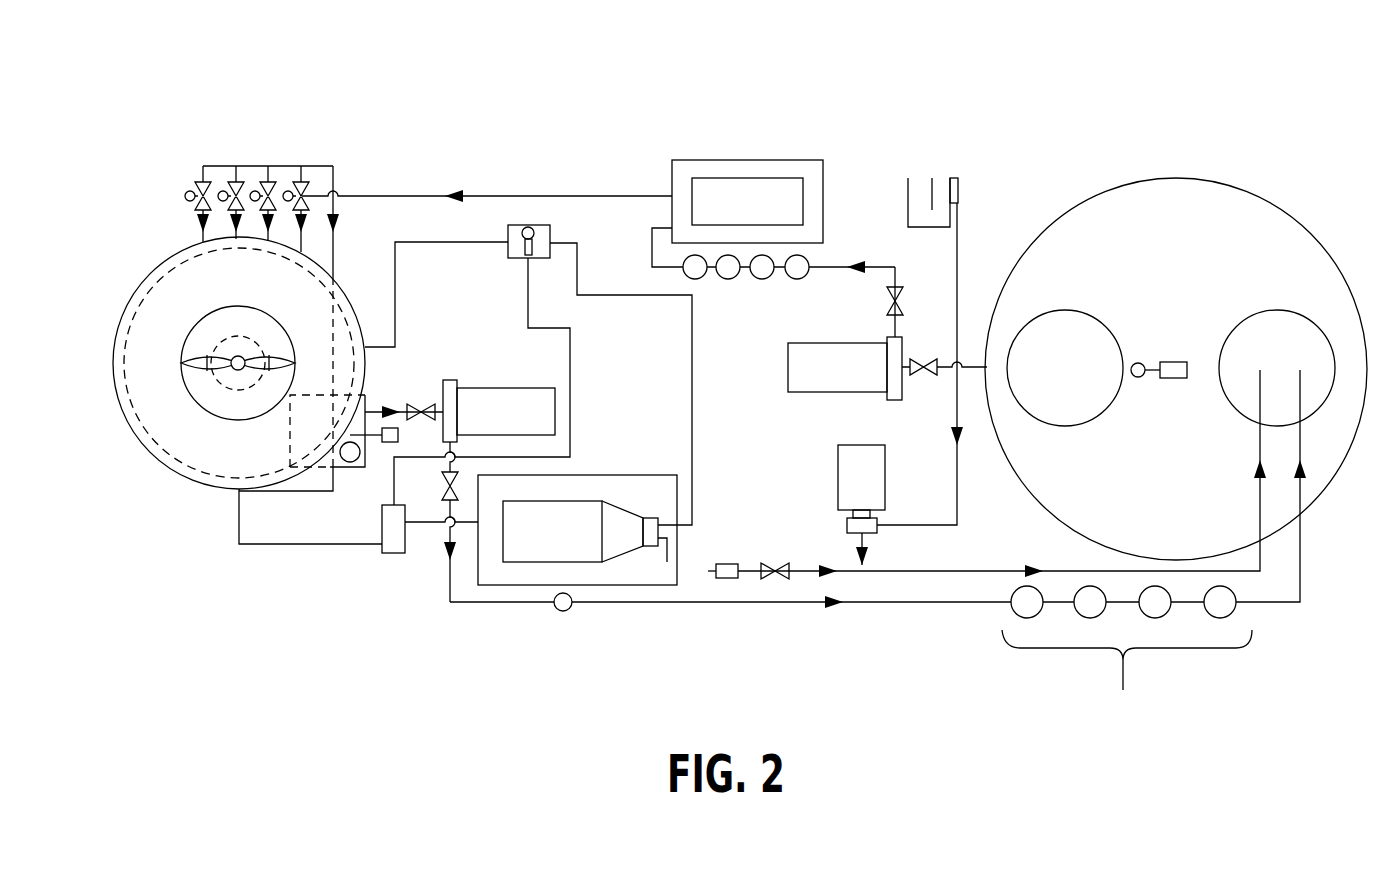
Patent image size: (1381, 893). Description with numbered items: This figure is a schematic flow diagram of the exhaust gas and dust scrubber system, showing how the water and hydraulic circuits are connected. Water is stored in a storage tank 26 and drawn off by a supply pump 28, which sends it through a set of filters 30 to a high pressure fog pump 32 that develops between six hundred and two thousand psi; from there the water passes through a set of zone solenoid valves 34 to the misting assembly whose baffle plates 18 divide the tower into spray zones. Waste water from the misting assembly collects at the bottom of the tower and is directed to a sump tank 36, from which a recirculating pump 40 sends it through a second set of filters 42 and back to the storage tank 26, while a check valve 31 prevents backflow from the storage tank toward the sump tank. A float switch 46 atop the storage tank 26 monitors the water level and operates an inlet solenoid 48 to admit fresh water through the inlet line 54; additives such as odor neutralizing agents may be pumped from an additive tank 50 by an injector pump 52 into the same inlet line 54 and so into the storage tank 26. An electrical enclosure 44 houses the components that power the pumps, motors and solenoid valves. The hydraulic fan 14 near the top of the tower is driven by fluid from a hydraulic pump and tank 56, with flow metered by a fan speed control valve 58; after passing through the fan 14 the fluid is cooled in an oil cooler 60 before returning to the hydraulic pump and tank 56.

The hydraulic fan 14 is at (188, 432).
The baffle plates 18 is at (150, 288).
The storage tank 26 is at (1157, 177).
The supply pump 28 is at (793, 355).
The set of filters 30 is at (818, 258).
The check valve 31 is at (565, 611).
The high pressure fog pump 32 is at (760, 154).
The zone solenoid valves 34 is at (273, 186).
The sump tank 36 is at (343, 470).
The recirculating pump 40 is at (497, 388).
The set of filters 42 is at (1127, 659).
The electrical enclosure 44 is at (717, 192).
The float switch 46 is at (1168, 378).
The inlet solenoid 48 is at (732, 578).
The additive tank 50 is at (960, 203).
The injector pump 52 is at (845, 478).
The inlet line 54 is at (913, 572).
The hydraulic pump and tank 56 is at (493, 577).
The fan speed control valve 58 is at (550, 232).
The oil cooler 60 is at (393, 553).